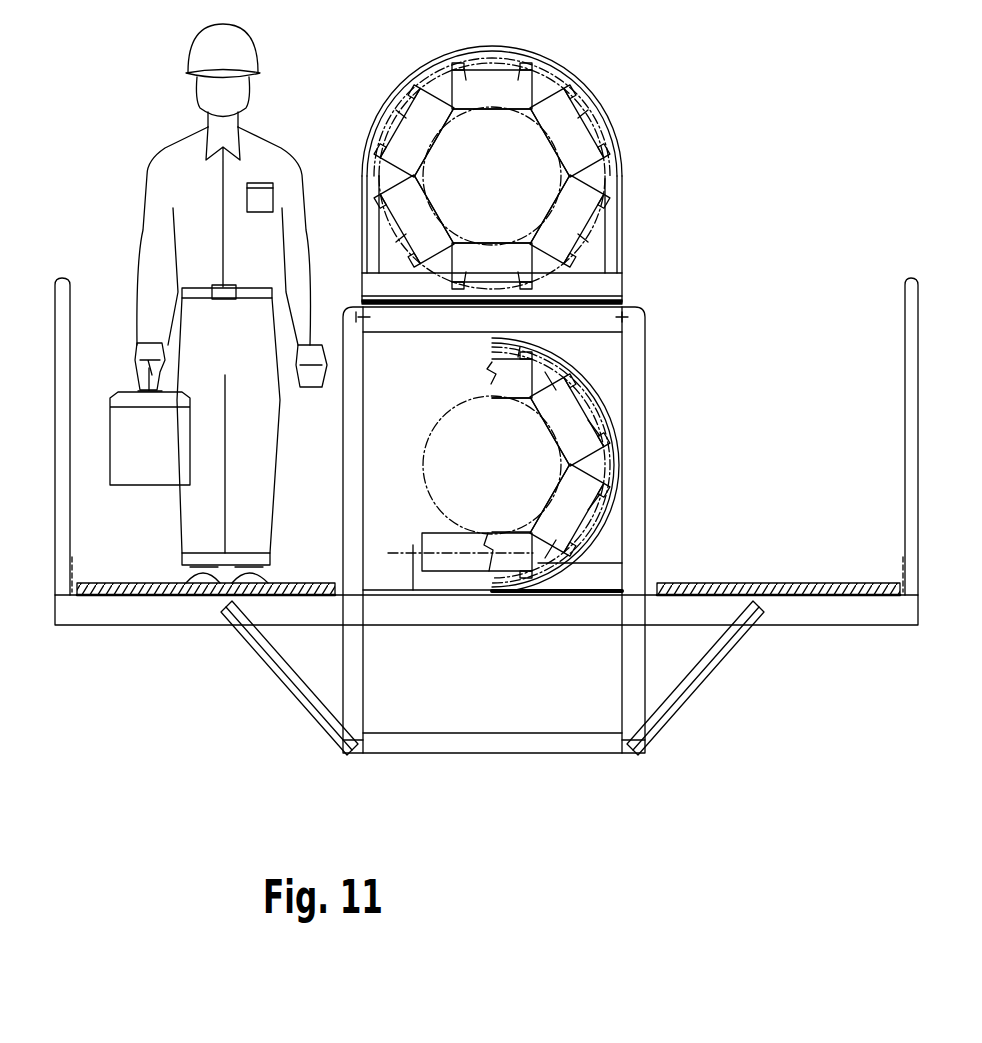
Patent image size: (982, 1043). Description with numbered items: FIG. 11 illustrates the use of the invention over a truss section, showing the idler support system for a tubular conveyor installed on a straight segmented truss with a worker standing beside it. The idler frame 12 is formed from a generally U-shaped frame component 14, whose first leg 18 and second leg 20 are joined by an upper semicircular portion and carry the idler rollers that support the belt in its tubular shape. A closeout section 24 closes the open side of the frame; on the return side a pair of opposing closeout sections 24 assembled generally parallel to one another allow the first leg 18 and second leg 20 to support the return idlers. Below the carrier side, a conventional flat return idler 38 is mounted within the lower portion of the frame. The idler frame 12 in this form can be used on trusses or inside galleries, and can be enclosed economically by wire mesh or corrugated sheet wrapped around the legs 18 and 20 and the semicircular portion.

The idler frame 12 is at (417, 70).
The U-shaped frame component 14 is at (557, 63).
The first leg 18 is at (362, 240).
The second leg 20 is at (620, 247).
The closeout section 24 is at (360, 295).
The conventional flat return idler 38 is at (450, 573).